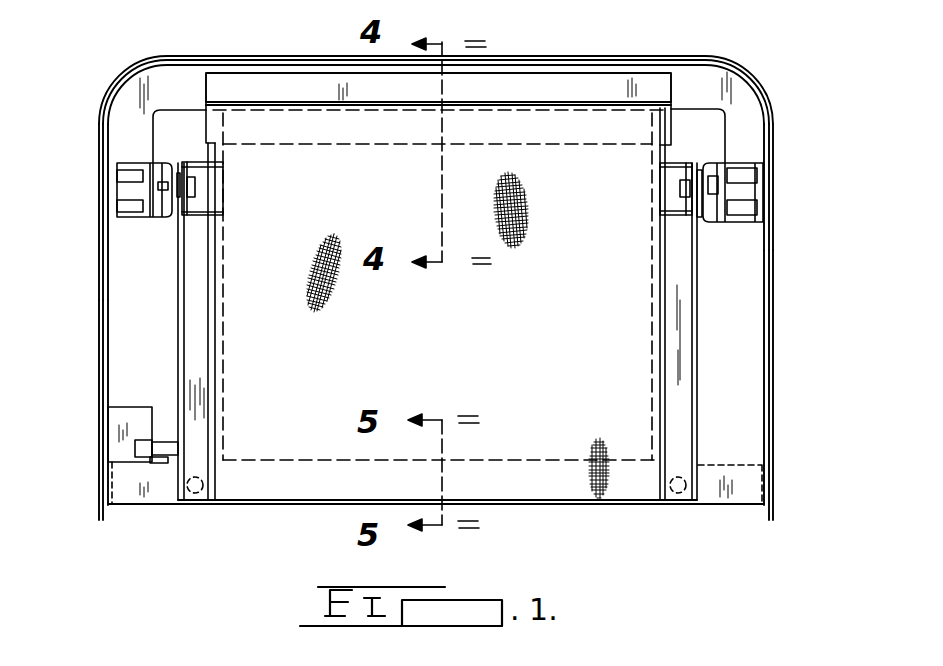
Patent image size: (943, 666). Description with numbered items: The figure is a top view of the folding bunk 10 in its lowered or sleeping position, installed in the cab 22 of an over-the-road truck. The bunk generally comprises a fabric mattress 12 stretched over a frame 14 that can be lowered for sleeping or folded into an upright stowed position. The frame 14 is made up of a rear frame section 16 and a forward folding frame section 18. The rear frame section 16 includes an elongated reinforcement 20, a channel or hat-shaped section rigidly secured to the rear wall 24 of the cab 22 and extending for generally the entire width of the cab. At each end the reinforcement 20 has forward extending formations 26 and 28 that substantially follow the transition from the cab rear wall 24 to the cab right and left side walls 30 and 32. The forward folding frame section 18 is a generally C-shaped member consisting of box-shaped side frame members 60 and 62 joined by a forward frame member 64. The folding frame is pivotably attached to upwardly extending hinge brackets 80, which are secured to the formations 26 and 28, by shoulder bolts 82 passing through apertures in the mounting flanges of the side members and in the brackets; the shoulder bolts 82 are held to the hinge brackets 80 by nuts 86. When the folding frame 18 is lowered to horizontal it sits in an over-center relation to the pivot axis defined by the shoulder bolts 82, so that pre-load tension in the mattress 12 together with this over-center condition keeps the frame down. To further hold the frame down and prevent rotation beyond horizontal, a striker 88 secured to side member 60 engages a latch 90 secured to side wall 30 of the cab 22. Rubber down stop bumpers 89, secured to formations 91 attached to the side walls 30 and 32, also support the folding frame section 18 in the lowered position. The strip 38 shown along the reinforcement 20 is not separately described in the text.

The folding bunk 10 is at (693, 522).
The fabric mattress 12 is at (528, 344).
The frame 14 is at (742, 398).
The rear frame section 16 is at (746, 89).
The forward folding frame section 18 is at (280, 426).
The elongated reinforcement 20 is at (140, 87).
The cab 22 is at (809, 317).
The rear wall 24 is at (557, 58).
The forward extending formation 26 is at (123, 132).
The forward extending formation 28 is at (748, 128).
The right side wall 30 is at (100, 297).
The left side wall 32 is at (773, 312).
The header strip 38 is at (605, 86).
The side frame member 60 is at (198, 306).
The side frame member 62 is at (676, 347).
The forward frame member 64 is at (263, 483).
The hinge bracket 80 is at (162, 187).
The shoulder bolt 82 is at (190, 183).
The nut 86 is at (712, 166).
The striker 88 is at (165, 464).
The rubber down stop bumper 89 is at (193, 492).
The latch 90 is at (107, 407).
The formation 91 is at (120, 487).